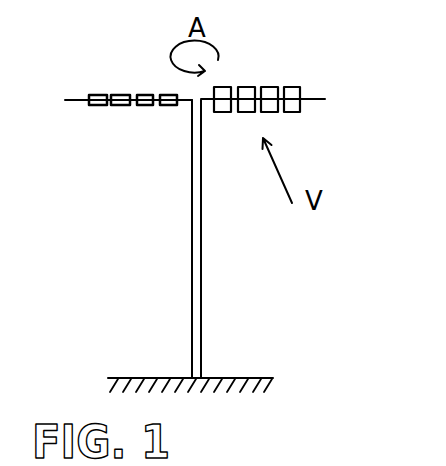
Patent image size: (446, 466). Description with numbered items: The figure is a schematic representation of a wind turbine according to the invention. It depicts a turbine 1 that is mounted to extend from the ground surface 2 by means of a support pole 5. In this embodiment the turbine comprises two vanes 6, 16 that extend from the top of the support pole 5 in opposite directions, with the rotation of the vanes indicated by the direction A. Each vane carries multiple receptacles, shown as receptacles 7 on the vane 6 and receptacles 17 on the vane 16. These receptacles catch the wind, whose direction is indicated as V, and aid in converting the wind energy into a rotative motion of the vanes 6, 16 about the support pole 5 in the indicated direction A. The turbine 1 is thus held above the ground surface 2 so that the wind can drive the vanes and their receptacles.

The turbine 1 is at (324, 43).
The ground surface 2 is at (250, 372).
The support pole 5 is at (201, 296).
The vane 6 is at (320, 102).
The receptacles 7 is at (312, 87).
The vane 16 is at (72, 103).
The receptacles 17 is at (79, 90).